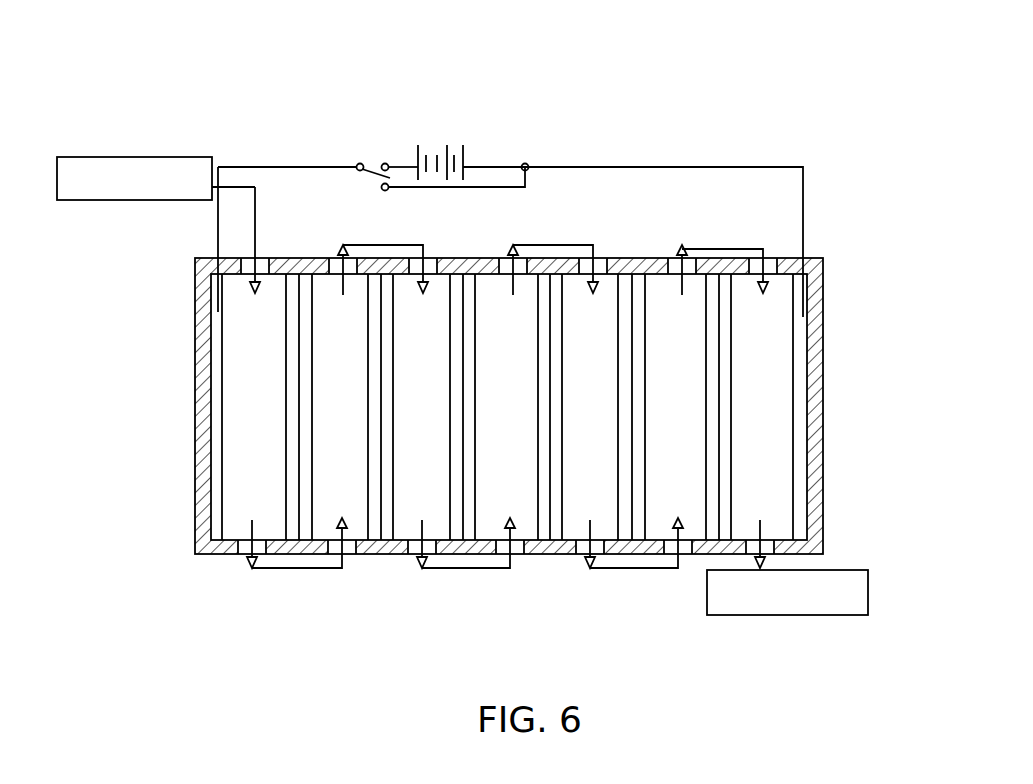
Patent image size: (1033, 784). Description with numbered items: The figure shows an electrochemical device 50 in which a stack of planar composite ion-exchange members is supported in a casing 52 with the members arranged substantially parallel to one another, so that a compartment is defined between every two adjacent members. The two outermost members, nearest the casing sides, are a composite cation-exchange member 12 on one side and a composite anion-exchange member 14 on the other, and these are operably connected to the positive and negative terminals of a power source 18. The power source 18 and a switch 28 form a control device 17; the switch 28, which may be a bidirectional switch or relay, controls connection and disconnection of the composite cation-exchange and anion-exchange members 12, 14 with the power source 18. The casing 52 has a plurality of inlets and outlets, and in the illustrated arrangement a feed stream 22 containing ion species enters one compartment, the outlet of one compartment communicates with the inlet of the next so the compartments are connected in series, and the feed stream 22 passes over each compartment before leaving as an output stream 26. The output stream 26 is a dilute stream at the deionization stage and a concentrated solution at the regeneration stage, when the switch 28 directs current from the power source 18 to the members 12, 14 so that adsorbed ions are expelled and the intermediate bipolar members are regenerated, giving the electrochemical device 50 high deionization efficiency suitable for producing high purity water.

The electrochemical device 50 is at (780, 56).
The composite cation-exchange member 12 is at (215, 362).
The composite anion-exchange member 14 is at (797, 398).
The casing 52 is at (203, 468).
The feed stream 22 is at (148, 157).
The output stream 26 is at (790, 615).
The control device 17 is at (444, 133).
The power source 18 is at (470, 160).
The switch 28 is at (374, 166).